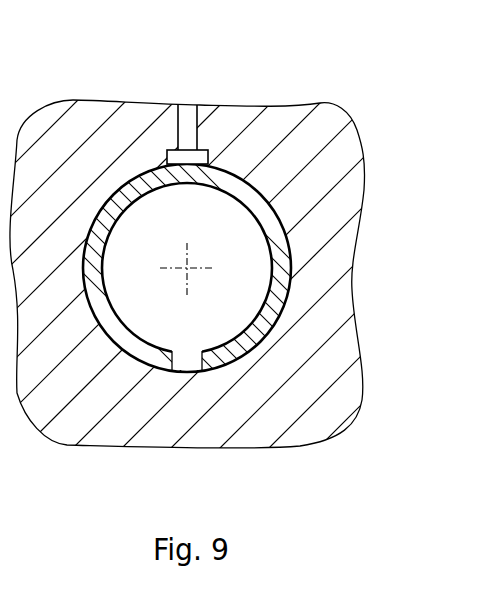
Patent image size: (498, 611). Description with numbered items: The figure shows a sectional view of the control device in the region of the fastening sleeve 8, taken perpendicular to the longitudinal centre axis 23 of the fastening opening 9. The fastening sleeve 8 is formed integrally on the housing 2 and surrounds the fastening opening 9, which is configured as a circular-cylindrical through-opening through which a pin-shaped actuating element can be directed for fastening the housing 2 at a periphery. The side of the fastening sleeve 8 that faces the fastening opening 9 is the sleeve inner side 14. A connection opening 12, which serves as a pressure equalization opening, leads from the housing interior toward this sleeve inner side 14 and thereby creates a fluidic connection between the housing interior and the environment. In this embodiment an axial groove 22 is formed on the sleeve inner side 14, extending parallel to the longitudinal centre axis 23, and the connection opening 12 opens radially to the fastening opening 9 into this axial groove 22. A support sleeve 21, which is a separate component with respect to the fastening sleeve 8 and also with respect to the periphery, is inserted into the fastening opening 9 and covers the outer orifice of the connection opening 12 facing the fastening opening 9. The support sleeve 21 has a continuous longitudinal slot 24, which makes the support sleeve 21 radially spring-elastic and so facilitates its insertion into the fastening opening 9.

The housing 2 is at (333, 110).
The fastening sleeve 8 is at (119, 160).
The fastening opening 9 is at (118, 331).
The connection opening 12 is at (185, 118).
The sleeve inner side 14 is at (253, 213).
The support sleeve 21 is at (136, 375).
The axial groove 22 is at (210, 149).
The longitudinal centre axis 23 is at (187, 268).
The longitudinal slot 24 is at (185, 362).